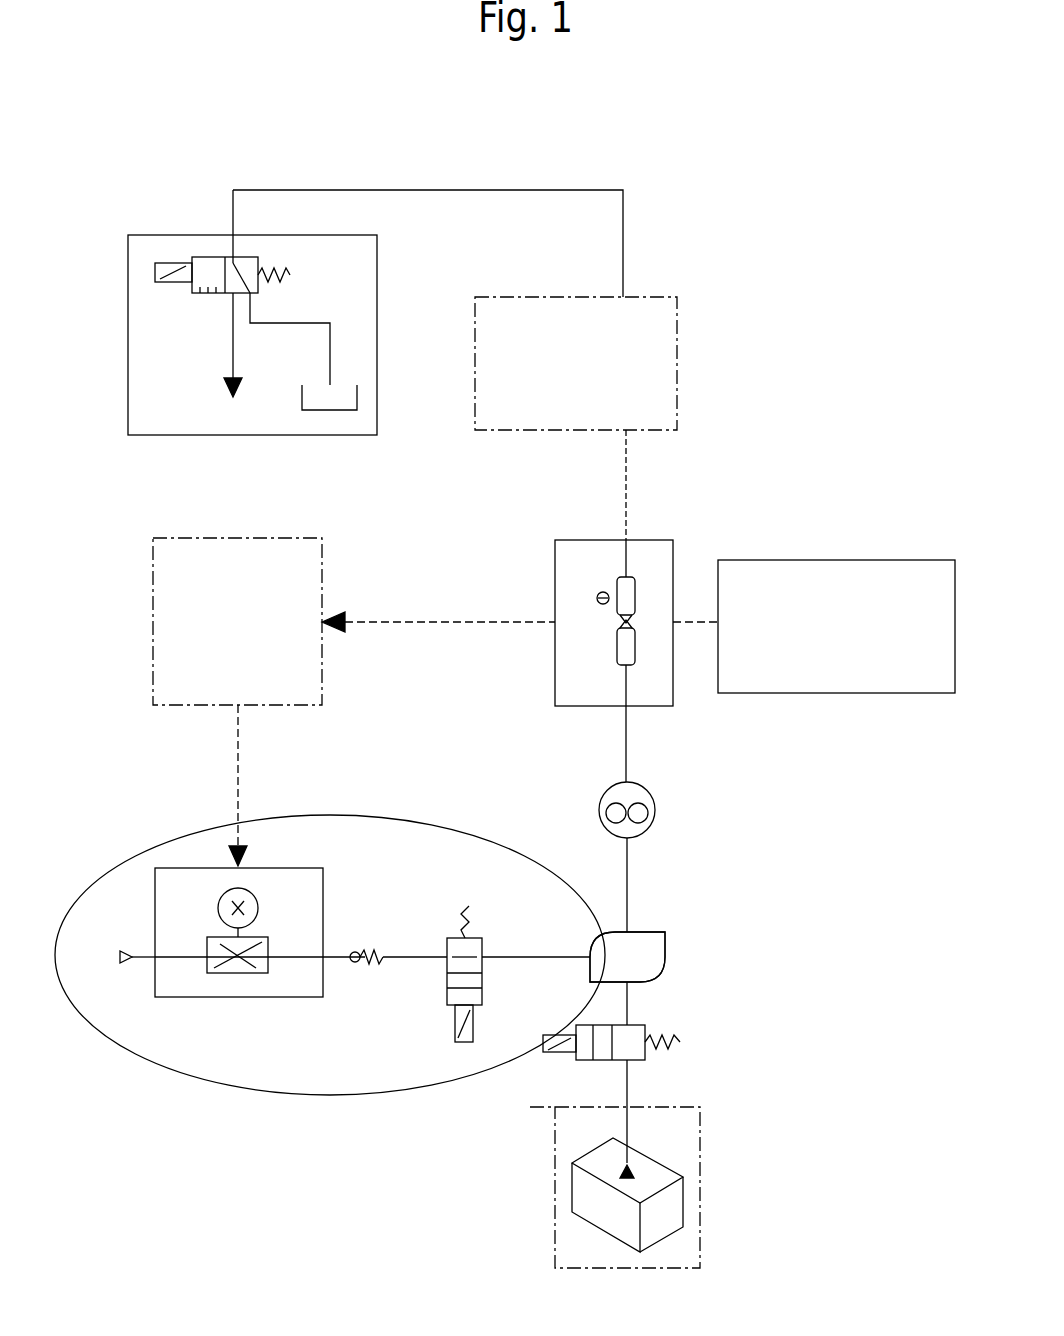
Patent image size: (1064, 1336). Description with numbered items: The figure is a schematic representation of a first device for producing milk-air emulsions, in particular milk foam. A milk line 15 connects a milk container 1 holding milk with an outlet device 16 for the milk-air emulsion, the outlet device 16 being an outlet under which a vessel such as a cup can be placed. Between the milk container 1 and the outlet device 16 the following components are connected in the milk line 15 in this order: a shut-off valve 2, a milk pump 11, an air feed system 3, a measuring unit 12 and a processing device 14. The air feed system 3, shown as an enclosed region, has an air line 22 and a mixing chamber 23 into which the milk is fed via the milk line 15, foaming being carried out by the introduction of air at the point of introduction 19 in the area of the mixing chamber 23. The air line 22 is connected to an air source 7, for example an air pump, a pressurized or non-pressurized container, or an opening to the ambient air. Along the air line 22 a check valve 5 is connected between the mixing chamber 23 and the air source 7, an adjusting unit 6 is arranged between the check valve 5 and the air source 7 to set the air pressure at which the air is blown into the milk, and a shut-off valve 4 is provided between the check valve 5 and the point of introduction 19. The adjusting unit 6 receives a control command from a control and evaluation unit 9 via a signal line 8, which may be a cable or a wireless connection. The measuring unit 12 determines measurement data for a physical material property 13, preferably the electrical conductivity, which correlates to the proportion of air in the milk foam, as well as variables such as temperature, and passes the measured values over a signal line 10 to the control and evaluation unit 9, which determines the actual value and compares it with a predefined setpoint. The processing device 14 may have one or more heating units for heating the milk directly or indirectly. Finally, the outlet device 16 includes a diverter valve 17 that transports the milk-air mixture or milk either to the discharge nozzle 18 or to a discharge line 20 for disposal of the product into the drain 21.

The milk container 1 is at (700, 1213).
The shut-off valve 2 is at (682, 1042).
The air feed system 3 is at (328, 1095).
The shut-off valve 4 is at (447, 1000).
The check valve 5 is at (355, 965).
The adjusting unit 6 is at (323, 895).
The air source 7 is at (123, 963).
The signal line 8 is at (238, 797).
The control and evaluation unit 9 is at (325, 683).
The signal line 10 is at (470, 613).
The milk pump 11 is at (656, 818).
The measuring unit 12 is at (652, 710).
The physical material property 13 is at (828, 695).
The processing device 14 is at (676, 407).
The milk line 15 is at (628, 891).
The outlet device 16 is at (143, 235).
The diverter valve 17 is at (192, 290).
The discharge nozzle 18 is at (232, 360).
The point of introduction 19 is at (630, 932).
The discharge line 20 is at (330, 333).
The drain 21 is at (357, 406).
The air line 22 is at (540, 955).
The mixing chamber 23 is at (665, 960).